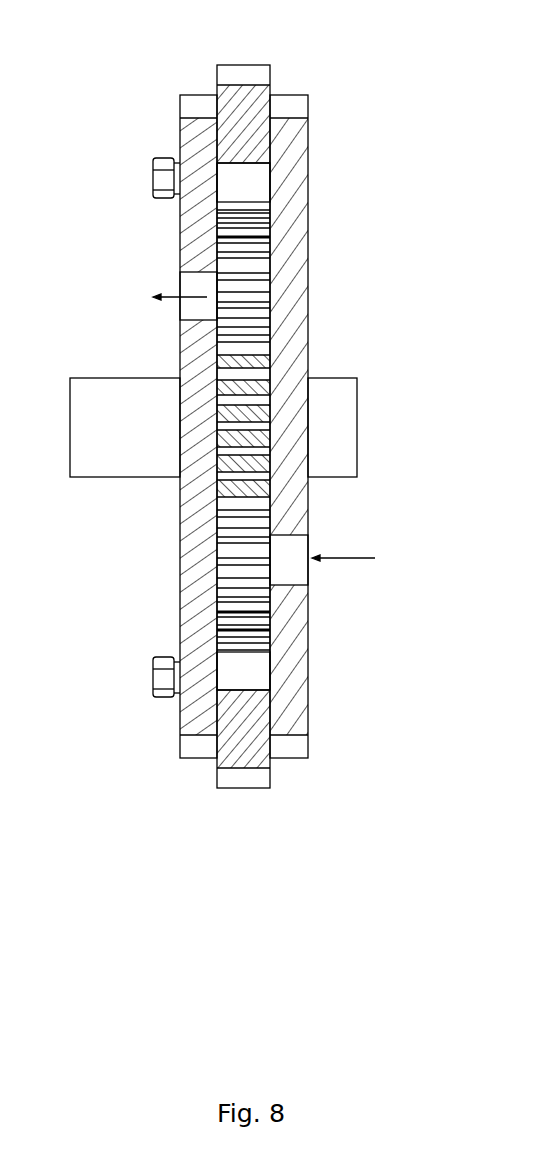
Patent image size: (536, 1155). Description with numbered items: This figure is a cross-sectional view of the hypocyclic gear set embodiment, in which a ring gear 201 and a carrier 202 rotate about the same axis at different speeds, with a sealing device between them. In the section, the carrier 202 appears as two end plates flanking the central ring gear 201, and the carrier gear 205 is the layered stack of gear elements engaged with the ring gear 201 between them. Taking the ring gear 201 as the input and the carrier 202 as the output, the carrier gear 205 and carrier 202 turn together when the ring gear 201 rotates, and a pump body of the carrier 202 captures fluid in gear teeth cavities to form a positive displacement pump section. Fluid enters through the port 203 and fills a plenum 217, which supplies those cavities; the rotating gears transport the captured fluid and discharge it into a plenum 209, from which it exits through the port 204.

The ring gear 201 is at (243, 104).
The carrier 202 is at (183, 143).
The port 203 is at (292, 572).
The port 204 is at (192, 305).
The carrier gear 205 is at (262, 262).
The plenum 209 is at (250, 192).
The plenum 217 is at (247, 673).